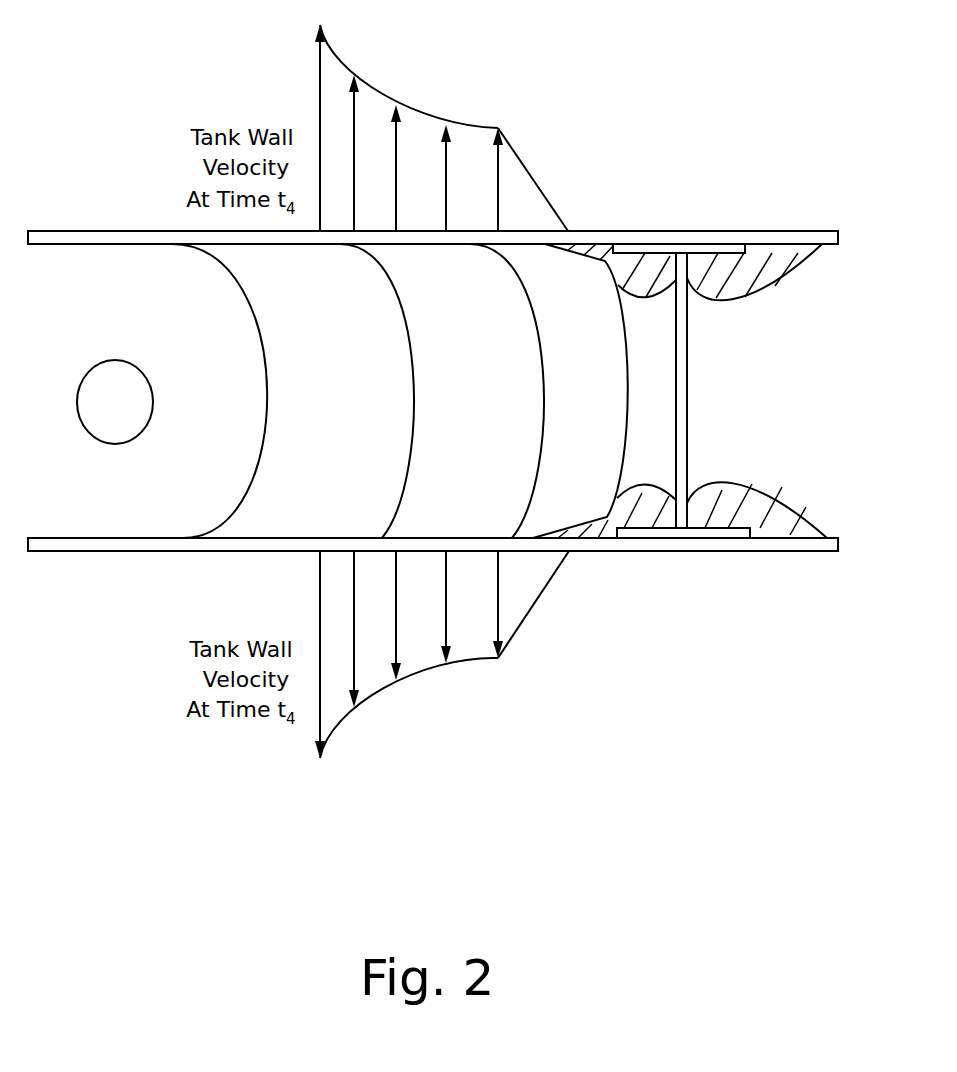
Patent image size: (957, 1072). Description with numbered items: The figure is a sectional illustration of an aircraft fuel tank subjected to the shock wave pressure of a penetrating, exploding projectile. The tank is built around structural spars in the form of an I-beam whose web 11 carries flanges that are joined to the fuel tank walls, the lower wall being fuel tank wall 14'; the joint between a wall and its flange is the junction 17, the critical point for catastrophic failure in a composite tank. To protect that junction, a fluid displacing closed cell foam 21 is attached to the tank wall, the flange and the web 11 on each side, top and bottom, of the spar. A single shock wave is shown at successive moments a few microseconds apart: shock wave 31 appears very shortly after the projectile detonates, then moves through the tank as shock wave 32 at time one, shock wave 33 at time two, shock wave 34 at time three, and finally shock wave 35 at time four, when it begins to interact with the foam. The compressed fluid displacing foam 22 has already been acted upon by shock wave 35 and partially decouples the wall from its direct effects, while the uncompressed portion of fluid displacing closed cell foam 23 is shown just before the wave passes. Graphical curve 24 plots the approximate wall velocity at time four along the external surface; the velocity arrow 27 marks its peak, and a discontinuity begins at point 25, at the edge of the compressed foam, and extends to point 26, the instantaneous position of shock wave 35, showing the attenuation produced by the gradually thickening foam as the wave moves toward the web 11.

The web 11 is at (678, 340).
The fuel tank wall 14' is at (433, 598).
The junction 17 is at (677, 245).
The fluid displacing closed cell foam 21 is at (758, 265).
The compressed fluid displacing foam 22 is at (581, 248).
The uncompressed portion of fluid displacing closed cell foam 23 is at (651, 273).
The graphical curve 24 is at (378, 92).
The point 25 is at (498, 128).
The point 26 is at (568, 233).
The velocity vector 27 is at (318, 108).
The shock wave 31 is at (95, 365).
The shock wave 32 is at (255, 458).
The shock wave 33 is at (403, 480).
The shock wave 34 is at (533, 470).
The shock wave 35 is at (620, 468).